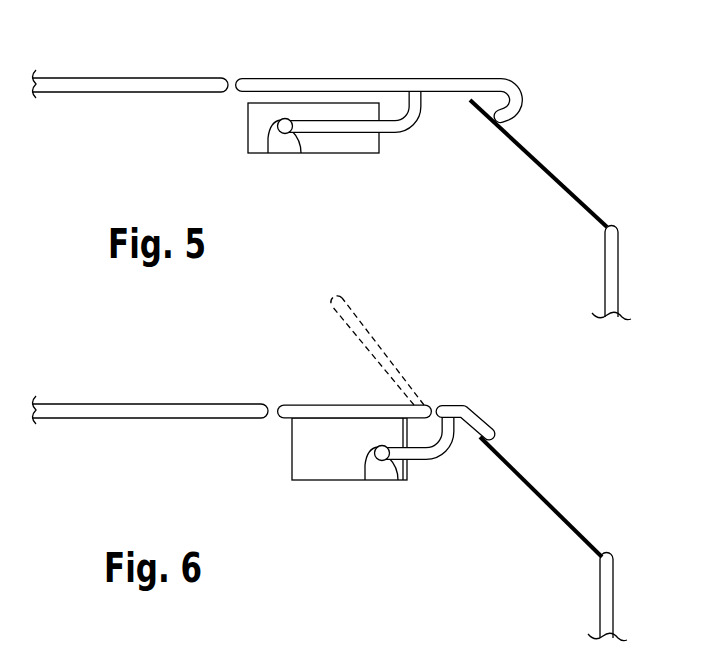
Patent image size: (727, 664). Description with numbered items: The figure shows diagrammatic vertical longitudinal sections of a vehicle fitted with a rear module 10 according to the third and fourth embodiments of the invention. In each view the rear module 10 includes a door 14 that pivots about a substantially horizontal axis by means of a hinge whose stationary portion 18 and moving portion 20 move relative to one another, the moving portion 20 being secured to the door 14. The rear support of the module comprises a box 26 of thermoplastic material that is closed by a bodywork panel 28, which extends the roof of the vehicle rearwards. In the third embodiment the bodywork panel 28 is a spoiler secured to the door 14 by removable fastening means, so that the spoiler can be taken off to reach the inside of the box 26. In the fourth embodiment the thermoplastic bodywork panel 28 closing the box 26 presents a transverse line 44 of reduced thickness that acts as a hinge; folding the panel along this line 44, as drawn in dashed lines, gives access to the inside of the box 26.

In FIG. 5, the rear module 10 is at (375, 198).
In FIG. 6, the rear module 10 is at (412, 540).
In FIG. 5, the door 14 is at (562, 182).
In FIG. 6, the door 14 is at (553, 505).
In FIG. 5, the stationary portion 18 is at (285, 143).
In FIG. 6, the stationary portion 18 is at (380, 470).
In FIG. 5, the moving portion 20 is at (415, 109).
In FIG. 6, the moving portion 20 is at (437, 449).
In FIG. 5, the box 26 is at (248, 128).
In FIG. 6, the box 26 is at (292, 463).
In FIG. 5, the bodywork panel 28 is at (449, 84).
In FIG. 6, the bodywork panel 28 is at (313, 404).
In FIG. 6, the line of reduced thickness 44 is at (436, 378).